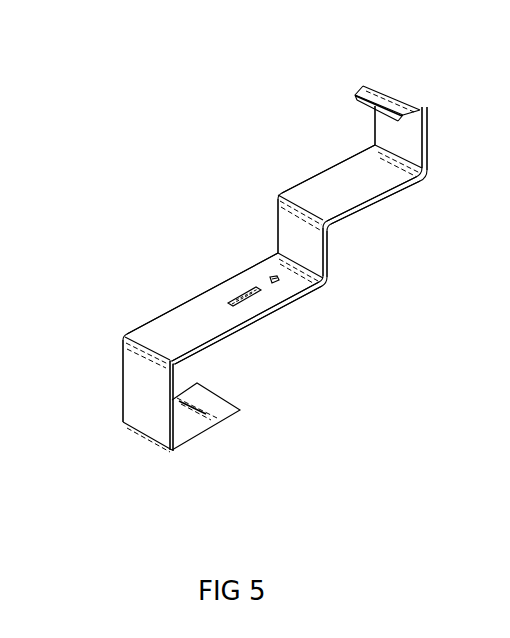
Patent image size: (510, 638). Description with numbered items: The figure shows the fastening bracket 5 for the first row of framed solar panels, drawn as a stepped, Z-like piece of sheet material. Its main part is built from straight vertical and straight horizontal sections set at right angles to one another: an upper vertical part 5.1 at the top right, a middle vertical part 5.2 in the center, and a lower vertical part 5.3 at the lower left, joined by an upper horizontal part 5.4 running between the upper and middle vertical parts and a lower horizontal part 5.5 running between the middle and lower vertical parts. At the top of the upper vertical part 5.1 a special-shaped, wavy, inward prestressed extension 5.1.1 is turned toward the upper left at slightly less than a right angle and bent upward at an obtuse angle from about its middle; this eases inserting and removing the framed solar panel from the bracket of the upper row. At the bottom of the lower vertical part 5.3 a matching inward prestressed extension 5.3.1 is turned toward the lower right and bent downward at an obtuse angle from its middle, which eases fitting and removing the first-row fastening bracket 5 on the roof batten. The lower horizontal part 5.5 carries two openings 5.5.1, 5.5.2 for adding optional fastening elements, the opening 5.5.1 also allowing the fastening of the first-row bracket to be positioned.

The fastening bracket 5 is at (218, 177).
The upper vertical part 5.1 is at (375, 127).
The inward prestressed extension 5.1.1 is at (367, 85).
The middle vertical part 5.2 is at (278, 235).
The lower vertical part 5.3 is at (123, 392).
The inward prestressed extension 5.3.1 is at (210, 426).
The upper horizontal part 5.4 is at (395, 188).
The lower horizontal part 5.5 is at (297, 297).
The opening 5.5.1 is at (225, 297).
The opening 5.5.2 is at (270, 278).